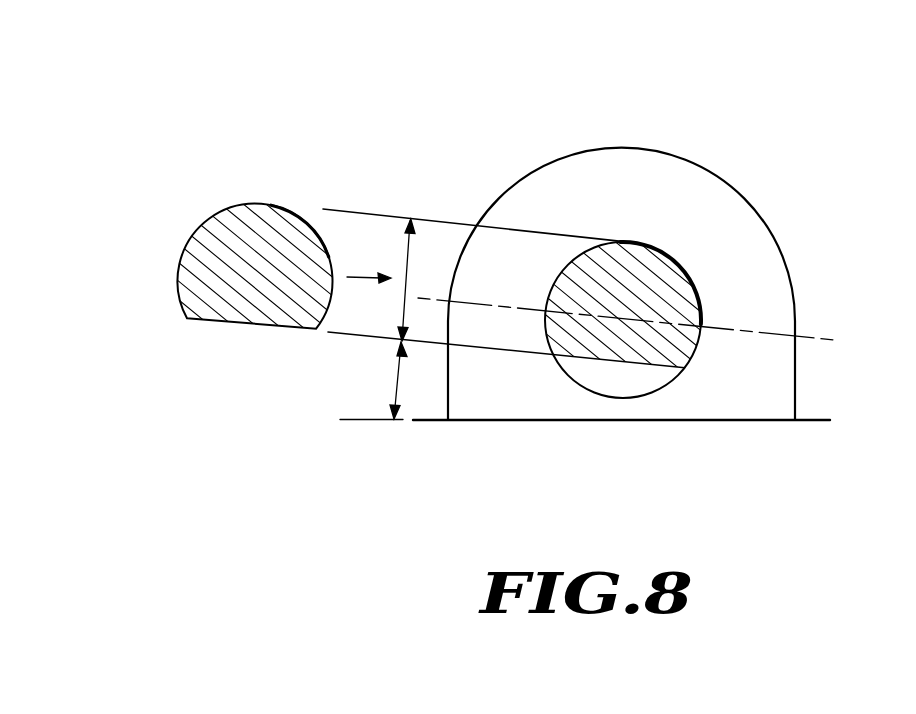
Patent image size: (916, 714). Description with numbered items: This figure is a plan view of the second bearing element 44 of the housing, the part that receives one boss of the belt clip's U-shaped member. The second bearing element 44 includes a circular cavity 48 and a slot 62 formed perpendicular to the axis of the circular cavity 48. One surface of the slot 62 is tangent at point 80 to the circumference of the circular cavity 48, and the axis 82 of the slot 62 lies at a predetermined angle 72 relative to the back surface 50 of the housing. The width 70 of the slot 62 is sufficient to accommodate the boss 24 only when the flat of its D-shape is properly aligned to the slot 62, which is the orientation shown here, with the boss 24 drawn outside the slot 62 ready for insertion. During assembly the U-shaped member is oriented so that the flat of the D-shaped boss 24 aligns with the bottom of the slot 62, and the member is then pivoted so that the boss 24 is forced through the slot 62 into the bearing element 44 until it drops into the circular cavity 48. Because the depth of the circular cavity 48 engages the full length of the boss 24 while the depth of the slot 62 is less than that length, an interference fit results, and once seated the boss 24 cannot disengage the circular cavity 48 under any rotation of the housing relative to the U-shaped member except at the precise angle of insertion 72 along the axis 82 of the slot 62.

The boss 24 is at (249, 202).
The second bearing element 44 is at (566, 151).
The circular cavity 48 is at (628, 378).
The back surface 50 is at (820, 417).
The slot 62 is at (480, 248).
The width 70 is at (405, 249).
The predetermined angle 72 is at (394, 380).
The tangent point 80 is at (653, 242).
The axis 82 is at (812, 337).